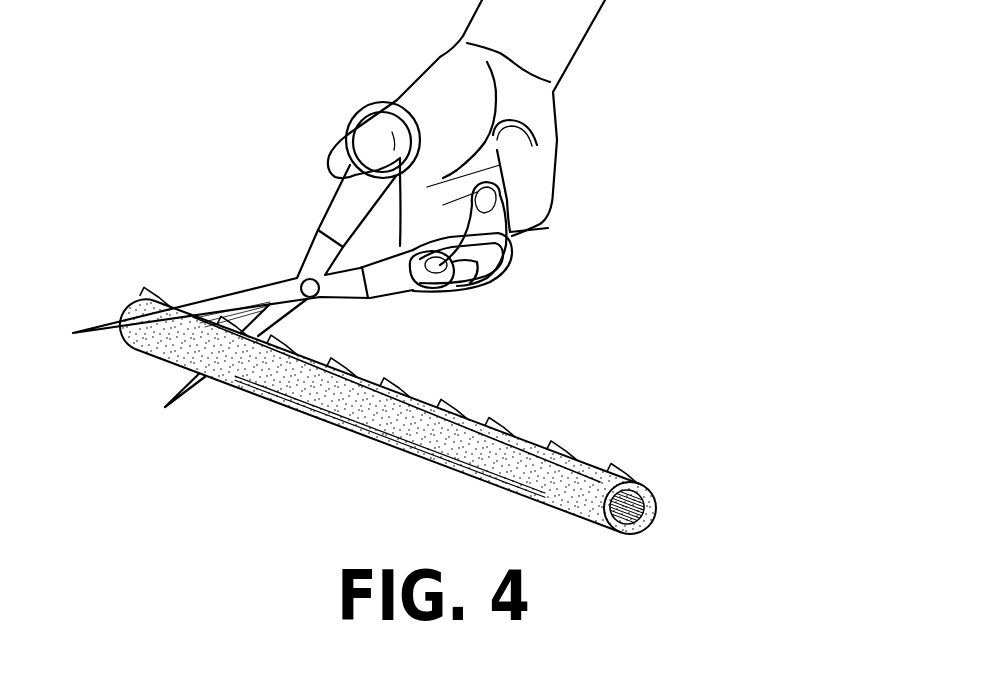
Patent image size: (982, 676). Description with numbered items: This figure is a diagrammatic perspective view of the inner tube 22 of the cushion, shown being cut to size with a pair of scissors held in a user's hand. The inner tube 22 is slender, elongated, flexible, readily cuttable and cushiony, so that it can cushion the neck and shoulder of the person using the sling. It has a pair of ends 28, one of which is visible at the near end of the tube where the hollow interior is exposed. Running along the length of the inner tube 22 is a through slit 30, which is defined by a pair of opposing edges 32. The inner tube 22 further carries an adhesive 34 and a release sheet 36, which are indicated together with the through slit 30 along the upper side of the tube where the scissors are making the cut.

The inner tube 22 is at (301, 432).
The ends 28 is at (655, 513).
The through slit 30 is at (477, 385).
The opposing edges 32 is at (275, 342).
The adhesive 34 is at (537, 441).
The release sheet 36 is at (548, 415).